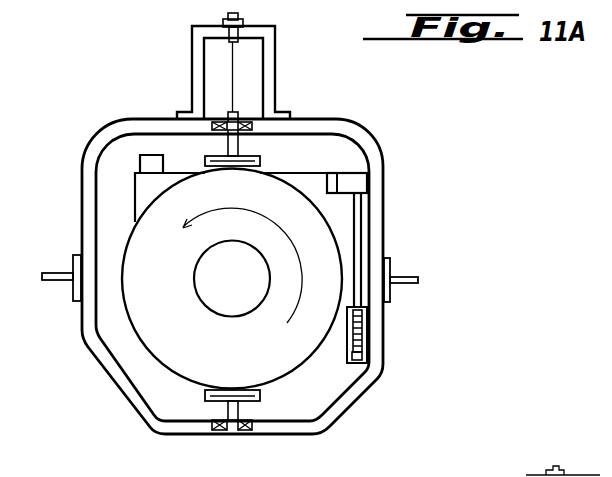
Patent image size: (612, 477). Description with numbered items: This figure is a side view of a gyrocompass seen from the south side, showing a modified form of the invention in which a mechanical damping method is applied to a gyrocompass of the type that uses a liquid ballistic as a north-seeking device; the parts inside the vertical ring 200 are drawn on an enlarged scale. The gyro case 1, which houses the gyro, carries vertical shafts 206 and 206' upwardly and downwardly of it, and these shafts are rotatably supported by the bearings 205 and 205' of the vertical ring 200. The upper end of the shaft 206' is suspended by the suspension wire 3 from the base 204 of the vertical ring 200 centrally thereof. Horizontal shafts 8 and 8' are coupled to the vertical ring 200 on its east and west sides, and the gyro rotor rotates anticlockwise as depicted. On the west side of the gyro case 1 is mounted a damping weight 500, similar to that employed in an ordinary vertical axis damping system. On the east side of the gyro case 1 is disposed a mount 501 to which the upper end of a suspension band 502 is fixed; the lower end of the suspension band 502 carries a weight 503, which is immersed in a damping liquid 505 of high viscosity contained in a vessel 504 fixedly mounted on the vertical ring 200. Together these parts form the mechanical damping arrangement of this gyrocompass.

The gyro case 1 is at (143, 332).
The suspension wire 3 is at (233, 72).
The shaft 8 is at (424, 270).
The shaft 8' is at (49, 280).
The vertical ring 200 is at (344, 408).
The base 204 is at (275, 26).
The bearing 205 is at (254, 448).
The bearing 205' is at (289, 105).
The vertical shaft 206 is at (193, 443).
The vertical shaft 206' is at (175, 107).
The damping weight 500 is at (138, 162).
The mount 501 is at (356, 174).
The suspension band 502 is at (362, 207).
The weight 503 is at (366, 347).
The vessel 504 is at (359, 373).
The damping liquid 505 is at (366, 302).